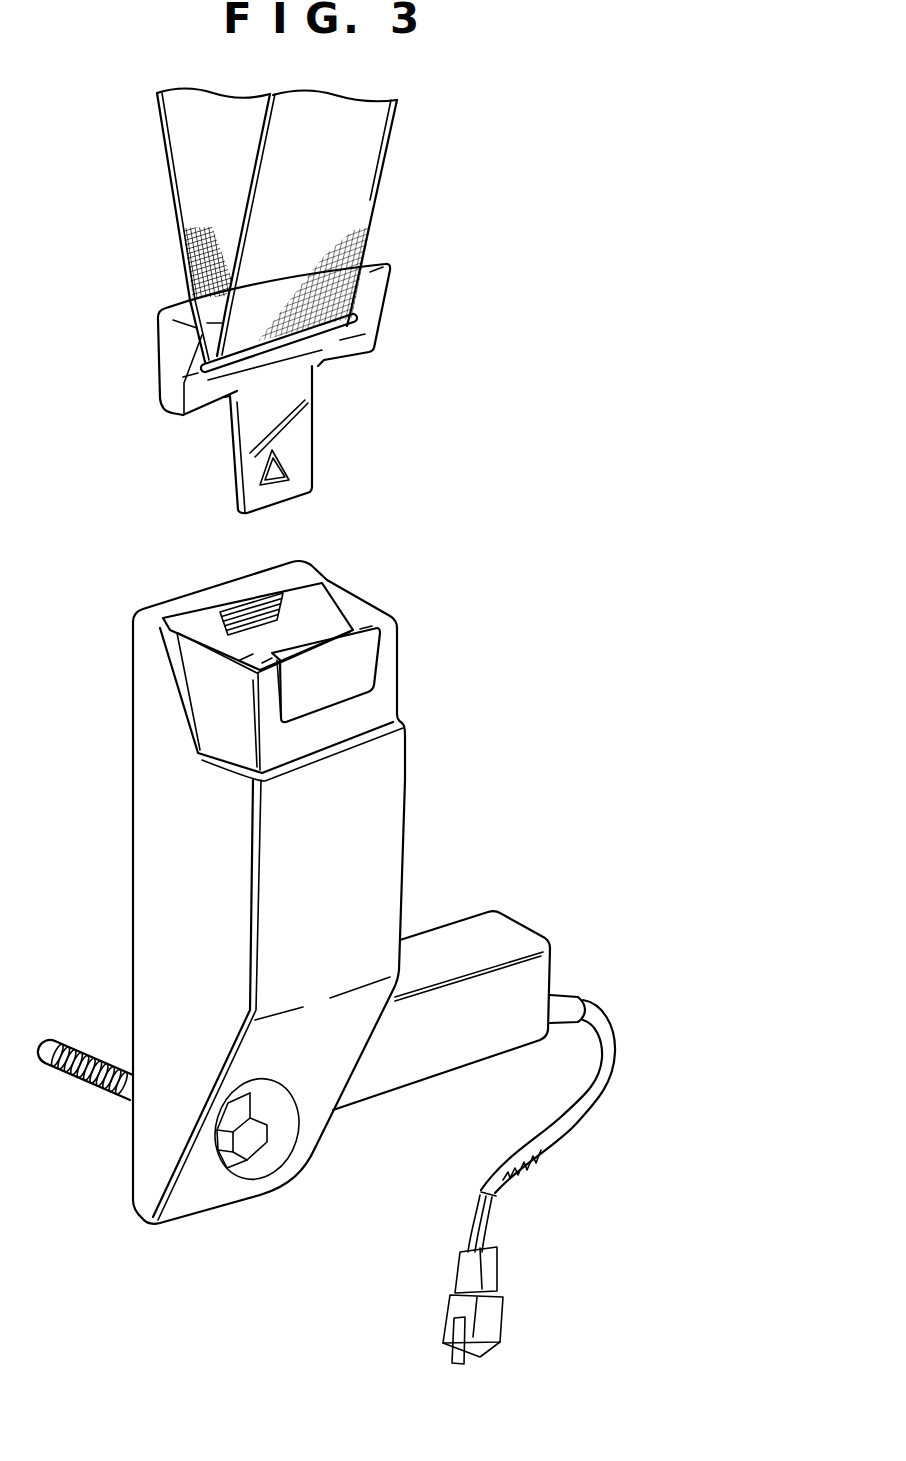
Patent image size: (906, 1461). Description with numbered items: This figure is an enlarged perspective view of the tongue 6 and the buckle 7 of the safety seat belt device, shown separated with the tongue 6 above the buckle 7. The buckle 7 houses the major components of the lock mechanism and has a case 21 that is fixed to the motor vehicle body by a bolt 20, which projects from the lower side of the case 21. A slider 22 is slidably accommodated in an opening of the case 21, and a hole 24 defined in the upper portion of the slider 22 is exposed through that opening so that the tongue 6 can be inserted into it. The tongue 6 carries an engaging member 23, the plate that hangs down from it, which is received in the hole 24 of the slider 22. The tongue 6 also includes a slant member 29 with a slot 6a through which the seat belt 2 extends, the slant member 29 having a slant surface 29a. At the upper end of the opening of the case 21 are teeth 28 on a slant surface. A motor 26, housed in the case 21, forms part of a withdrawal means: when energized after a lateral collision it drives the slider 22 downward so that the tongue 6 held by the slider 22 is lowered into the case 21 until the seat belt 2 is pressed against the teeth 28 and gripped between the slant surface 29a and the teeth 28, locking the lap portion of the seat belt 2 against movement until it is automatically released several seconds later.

The seat belt 2 is at (365, 167).
The tongue 6 is at (390, 287).
The slant member 29 is at (367, 333).
The slant surface 29a is at (155, 345).
The slot 6a is at (340, 330).
The engaging member 23 is at (302, 441).
The buckle 7 is at (410, 641).
The case 21 is at (155, 887).
The slider 22 is at (383, 700).
The hole 24 is at (292, 636).
The teeth 28 is at (243, 612).
The motor 26 is at (489, 928).
The bolt 20 is at (72, 1077).